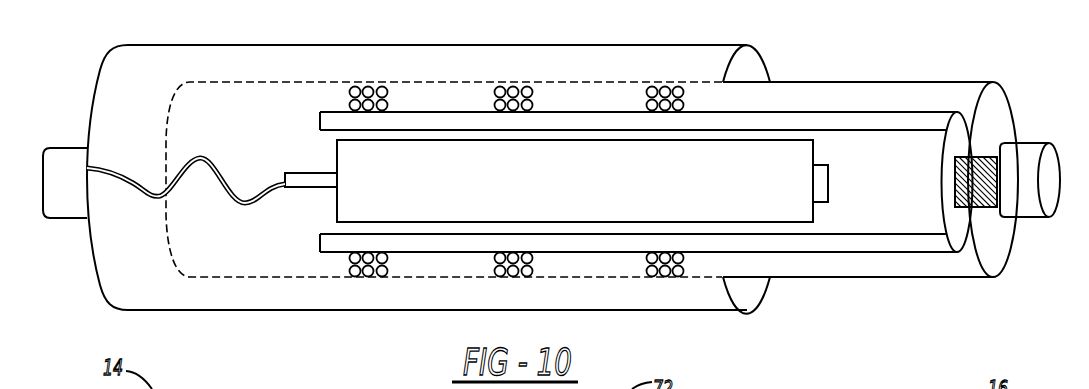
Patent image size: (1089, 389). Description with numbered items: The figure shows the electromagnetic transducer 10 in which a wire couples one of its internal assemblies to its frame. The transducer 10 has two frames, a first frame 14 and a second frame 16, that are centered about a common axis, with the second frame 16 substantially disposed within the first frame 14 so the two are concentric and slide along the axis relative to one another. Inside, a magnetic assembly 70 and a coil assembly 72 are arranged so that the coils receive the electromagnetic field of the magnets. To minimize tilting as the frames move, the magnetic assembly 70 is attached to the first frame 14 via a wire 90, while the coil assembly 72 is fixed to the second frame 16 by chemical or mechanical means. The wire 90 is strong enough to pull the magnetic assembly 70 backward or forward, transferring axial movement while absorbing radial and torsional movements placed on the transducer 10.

The electromagnetic transducer 10 is at (815, 48).
The first frame 14 is at (232, 45).
The second frame 16 is at (913, 82).
The magnetic assembly 70 is at (483, 192).
The coil assembly 72 is at (639, 98).
The wire 90 is at (222, 178).